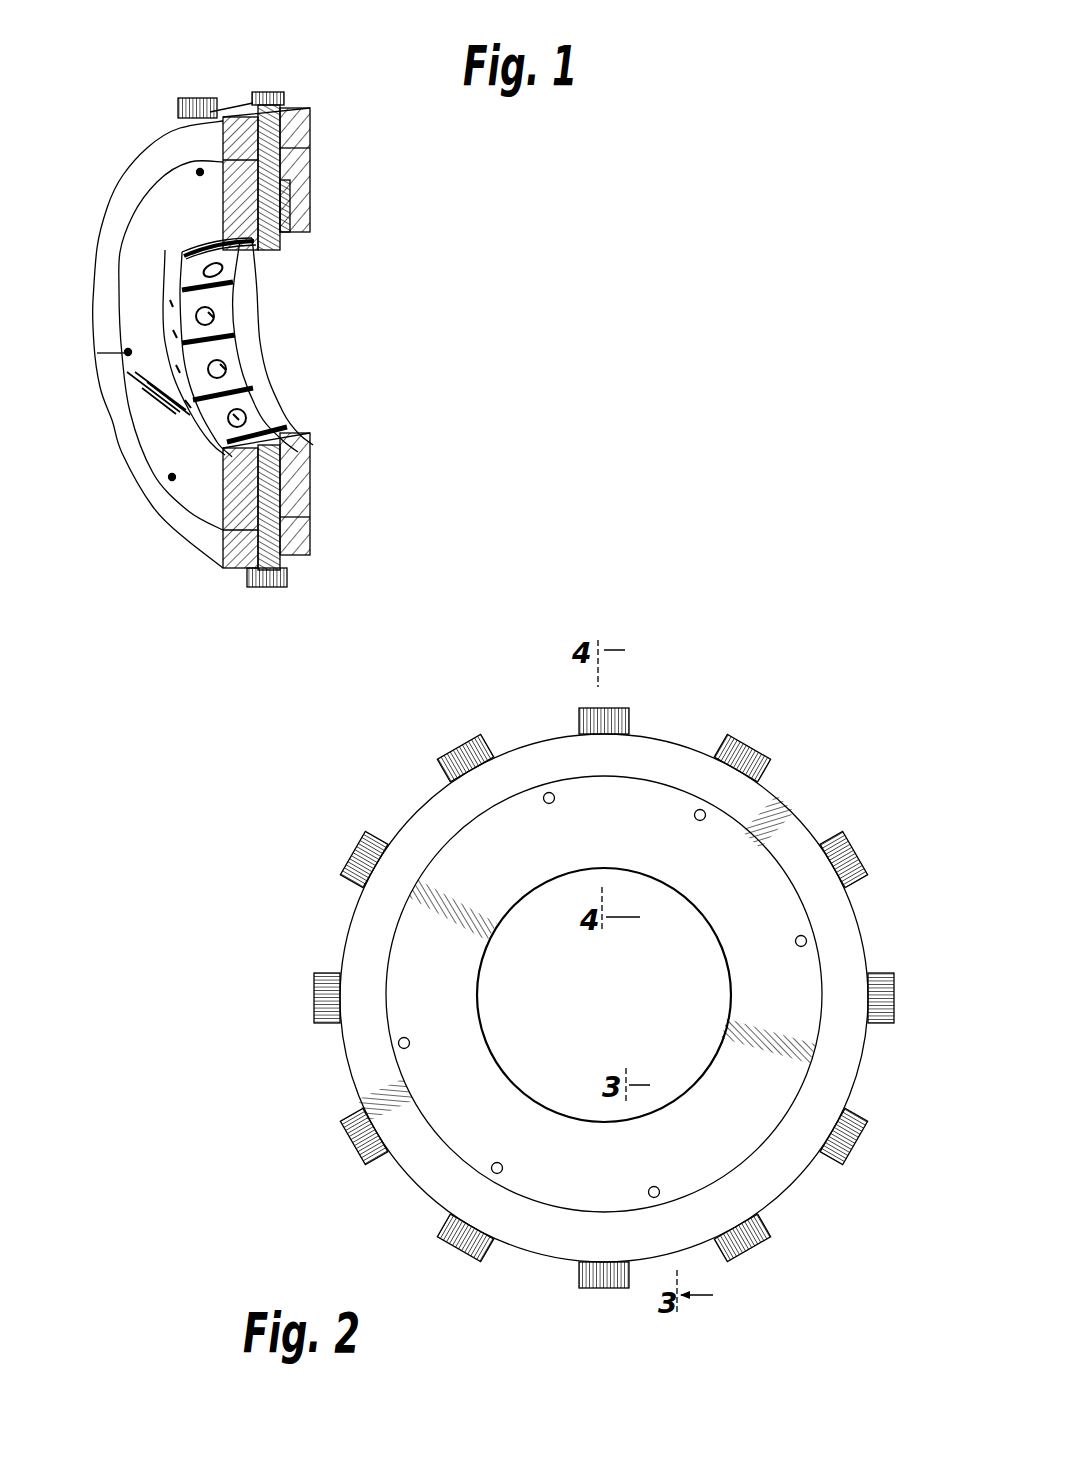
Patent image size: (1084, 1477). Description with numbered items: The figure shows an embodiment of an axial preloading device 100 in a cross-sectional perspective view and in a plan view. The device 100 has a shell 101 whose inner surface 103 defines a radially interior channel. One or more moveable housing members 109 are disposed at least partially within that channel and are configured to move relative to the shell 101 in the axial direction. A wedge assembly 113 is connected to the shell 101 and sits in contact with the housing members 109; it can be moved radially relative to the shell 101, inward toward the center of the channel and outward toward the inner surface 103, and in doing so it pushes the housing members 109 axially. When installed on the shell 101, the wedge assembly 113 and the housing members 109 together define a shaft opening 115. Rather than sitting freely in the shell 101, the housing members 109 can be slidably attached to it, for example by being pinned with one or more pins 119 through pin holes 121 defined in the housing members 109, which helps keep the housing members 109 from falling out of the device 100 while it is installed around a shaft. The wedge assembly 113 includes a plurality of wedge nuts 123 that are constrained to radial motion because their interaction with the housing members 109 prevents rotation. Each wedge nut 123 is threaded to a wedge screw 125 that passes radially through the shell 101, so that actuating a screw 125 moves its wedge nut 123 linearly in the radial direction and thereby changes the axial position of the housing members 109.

In FIG. 1, the axial preloading device 100 is at (443, 300).
In FIG. 2, the axial preloading device 100 is at (822, 707).
In FIG. 1, the shell 101 is at (147, 163).
In FIG. 2, the shell 101 is at (668, 762).
In FIG. 1, the inner surface 103 is at (117, 250).
In FIG. 1, the moveable housing member 109 is at (298, 172).
In FIG. 2, the moveable housing member 109 is at (553, 1170).
In FIG. 1, the wedge assembly 113 is at (177, 307).
In FIG. 1, the shaft opening 115 is at (323, 338).
In FIG. 2, the shaft opening 115 is at (618, 1011).
In FIG. 2, the pin 119 is at (408, 1040).
In FIG. 1, the pin hole 121 is at (97, 353).
In FIG. 2, the pin hole 121 is at (400, 1046).
In FIG. 1, the wedge nut 123 is at (220, 296).
In FIG. 1, the wedge screw 125 is at (193, 100).
In FIG. 2, the wedge screw 125 is at (450, 748).